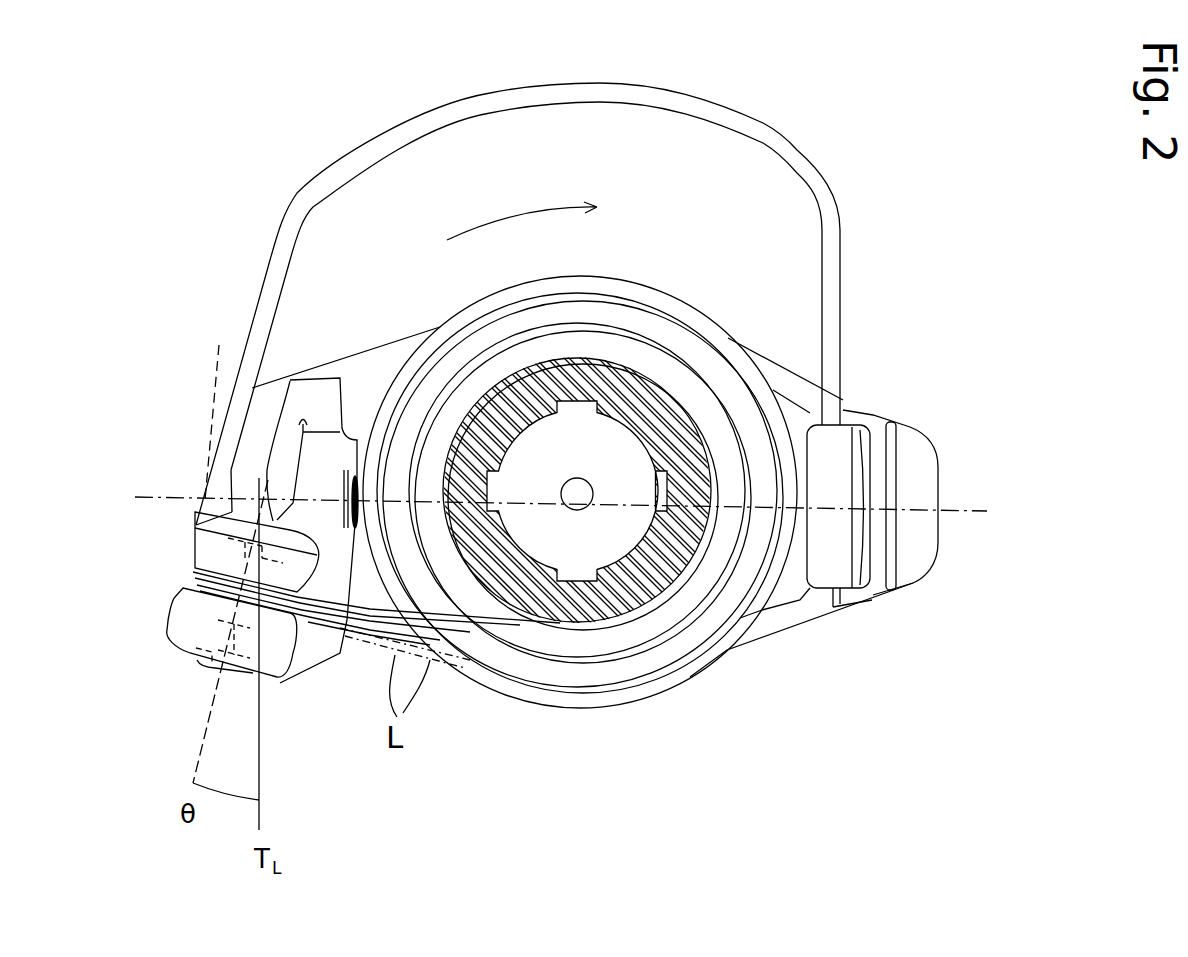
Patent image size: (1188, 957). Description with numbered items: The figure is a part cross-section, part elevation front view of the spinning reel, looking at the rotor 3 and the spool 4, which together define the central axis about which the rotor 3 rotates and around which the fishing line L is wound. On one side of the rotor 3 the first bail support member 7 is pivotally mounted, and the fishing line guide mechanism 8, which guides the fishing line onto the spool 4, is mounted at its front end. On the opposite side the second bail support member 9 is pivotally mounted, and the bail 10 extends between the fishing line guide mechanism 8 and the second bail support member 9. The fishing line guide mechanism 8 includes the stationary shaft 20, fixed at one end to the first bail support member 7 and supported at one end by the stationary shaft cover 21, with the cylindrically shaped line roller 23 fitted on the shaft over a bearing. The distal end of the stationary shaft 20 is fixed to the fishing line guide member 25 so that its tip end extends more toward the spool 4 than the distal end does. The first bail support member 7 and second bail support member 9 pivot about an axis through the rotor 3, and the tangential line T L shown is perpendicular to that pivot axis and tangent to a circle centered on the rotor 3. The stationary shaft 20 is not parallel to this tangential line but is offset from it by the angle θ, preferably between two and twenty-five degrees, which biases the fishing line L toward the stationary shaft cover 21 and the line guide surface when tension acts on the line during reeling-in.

The rotor 3 is at (772, 373).
The spool 4 is at (660, 570).
The first bail support member 7 is at (253, 678).
The fishing line guide mechanism 8 is at (309, 711).
The second bail support member 9 is at (840, 437).
The bail 10 is at (803, 155).
The stationary shaft 20 is at (219, 404).
The stationary shaft cover 21 is at (210, 510).
The line roller 23 is at (205, 518).
The fishing line guide member 25 is at (170, 640).